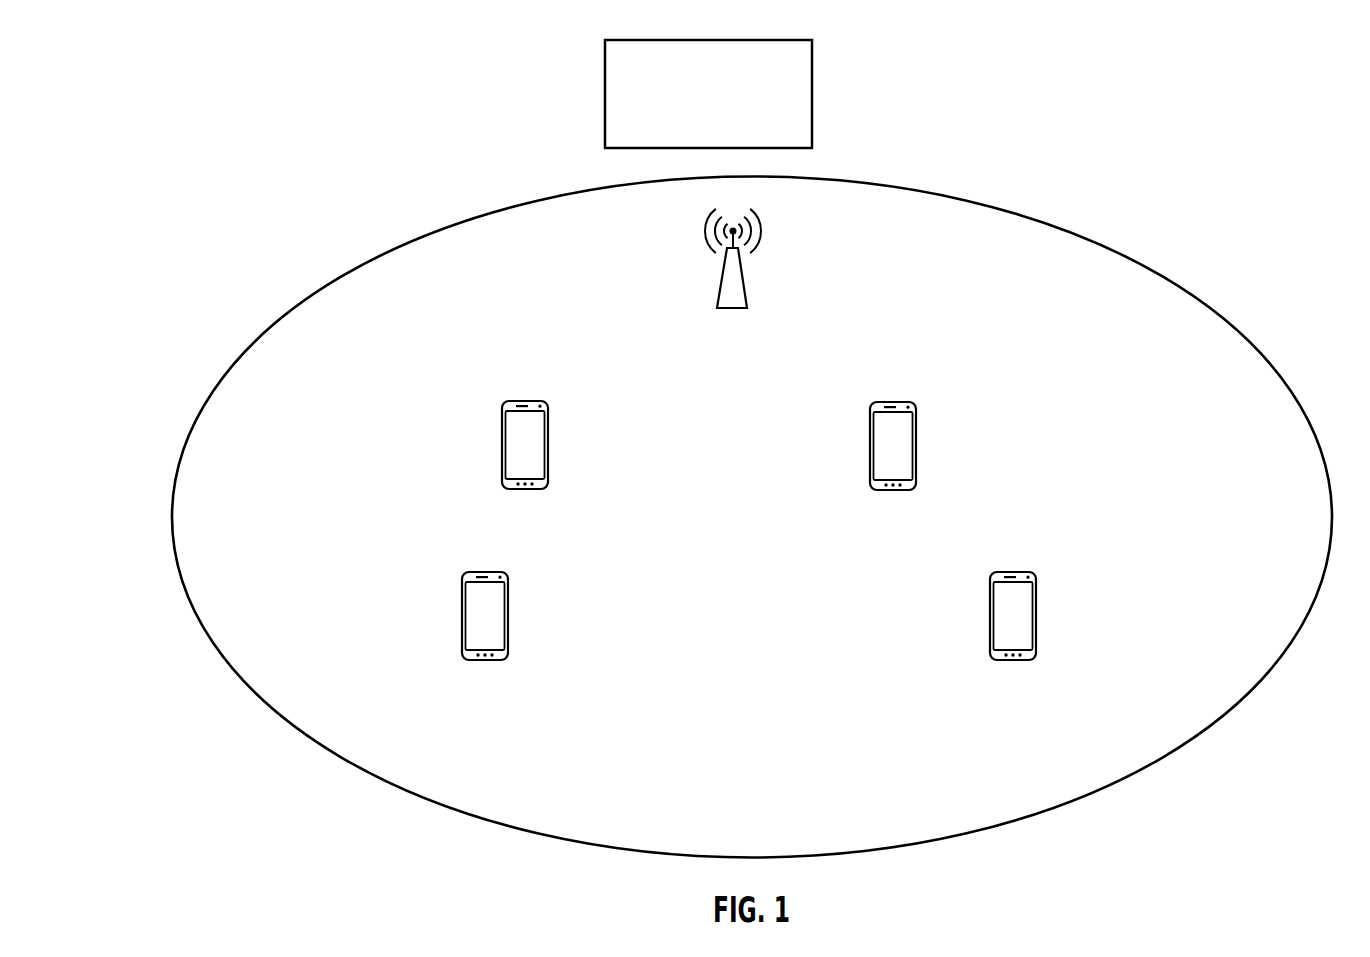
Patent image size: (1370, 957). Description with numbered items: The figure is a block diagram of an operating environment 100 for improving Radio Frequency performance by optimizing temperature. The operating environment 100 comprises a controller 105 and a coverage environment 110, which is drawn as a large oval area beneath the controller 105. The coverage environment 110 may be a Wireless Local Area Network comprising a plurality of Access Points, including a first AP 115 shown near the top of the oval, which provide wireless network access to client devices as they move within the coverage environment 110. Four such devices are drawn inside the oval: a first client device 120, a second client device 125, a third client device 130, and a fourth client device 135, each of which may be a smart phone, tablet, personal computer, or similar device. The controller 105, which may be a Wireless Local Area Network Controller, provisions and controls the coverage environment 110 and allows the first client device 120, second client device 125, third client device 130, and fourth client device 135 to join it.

The operating environment 100 is at (400, 114).
The controller 105 is at (695, 40).
The coverage environment 110 is at (945, 195).
The first access point 115 is at (743, 278).
The first client device 120 is at (870, 447).
The second client device 125 is at (502, 447).
The third client device 130 is at (990, 617).
The fourth client device 135 is at (462, 617).